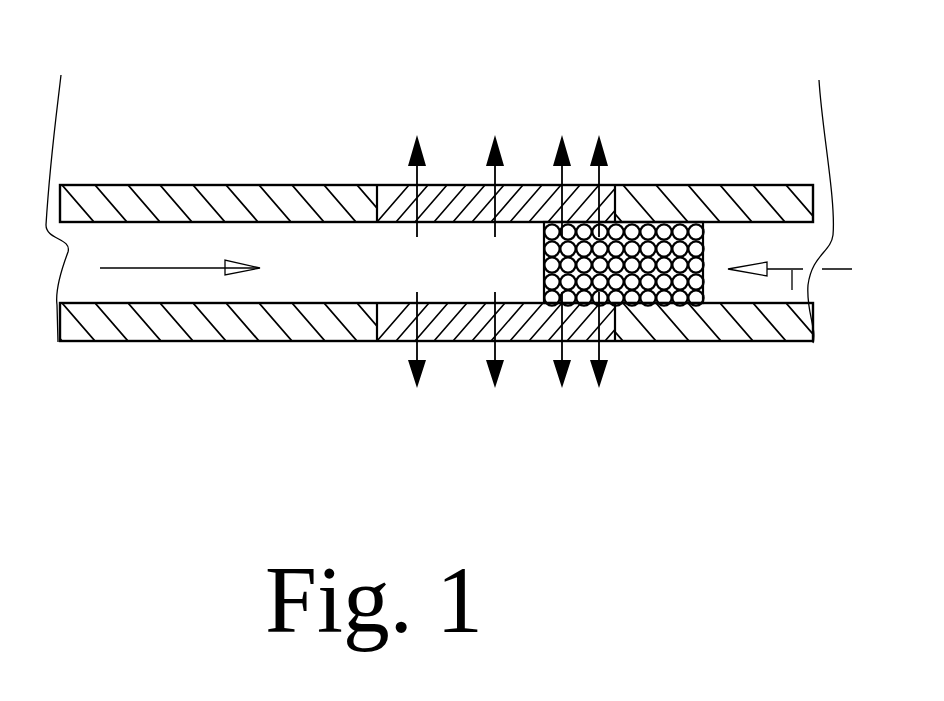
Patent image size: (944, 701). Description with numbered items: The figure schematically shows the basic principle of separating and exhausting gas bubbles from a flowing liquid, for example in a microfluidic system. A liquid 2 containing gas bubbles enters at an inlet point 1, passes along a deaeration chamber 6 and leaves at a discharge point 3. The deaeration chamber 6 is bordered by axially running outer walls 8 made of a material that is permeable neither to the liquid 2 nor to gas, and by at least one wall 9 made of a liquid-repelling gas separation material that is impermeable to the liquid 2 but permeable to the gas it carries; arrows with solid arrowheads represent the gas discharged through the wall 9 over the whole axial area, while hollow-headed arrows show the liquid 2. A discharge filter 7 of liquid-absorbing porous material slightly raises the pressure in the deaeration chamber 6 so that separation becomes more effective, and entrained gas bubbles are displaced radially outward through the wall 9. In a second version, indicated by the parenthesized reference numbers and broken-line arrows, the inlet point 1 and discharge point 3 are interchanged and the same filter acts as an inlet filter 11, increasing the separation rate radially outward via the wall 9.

The inlet point 1 is at (79, 181).
The discharge point 3 is at (831, 182).
The liquid 2 is at (183, 267).
The deaeration chamber 6 is at (408, 273).
The discharge filter 7 is at (643, 370).
The inlet filter 11 is at (660, 345).
The outer walls 8 is at (140, 328).
The wall 9 is at (520, 193).